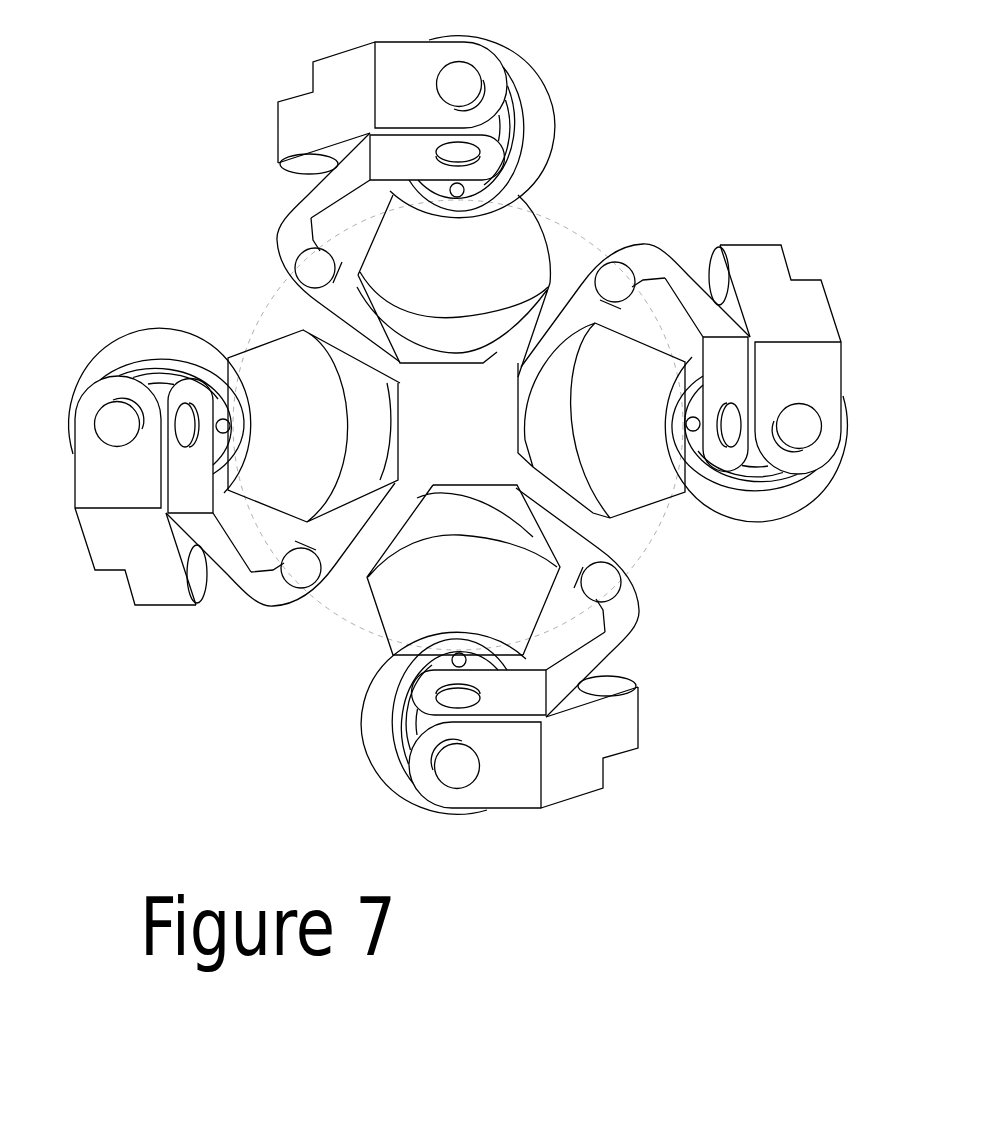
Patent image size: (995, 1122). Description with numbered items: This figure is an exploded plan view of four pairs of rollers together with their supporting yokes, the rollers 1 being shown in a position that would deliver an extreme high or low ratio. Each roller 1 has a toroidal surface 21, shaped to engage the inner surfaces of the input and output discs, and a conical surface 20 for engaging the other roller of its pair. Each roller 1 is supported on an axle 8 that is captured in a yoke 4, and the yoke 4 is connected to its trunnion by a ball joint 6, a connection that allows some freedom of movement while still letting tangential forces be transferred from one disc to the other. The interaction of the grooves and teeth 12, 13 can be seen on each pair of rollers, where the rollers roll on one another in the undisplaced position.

The roller 1 is at (391, 249).
The conical surface 20 is at (402, 252).
The toroidal surface 21 is at (415, 327).
The yoke 4 is at (768, 277).
The grooves 12 is at (687, 493).
The teeth 13 is at (768, 493).
The axle 8 is at (118, 423).
The ball joint 6 is at (298, 568).